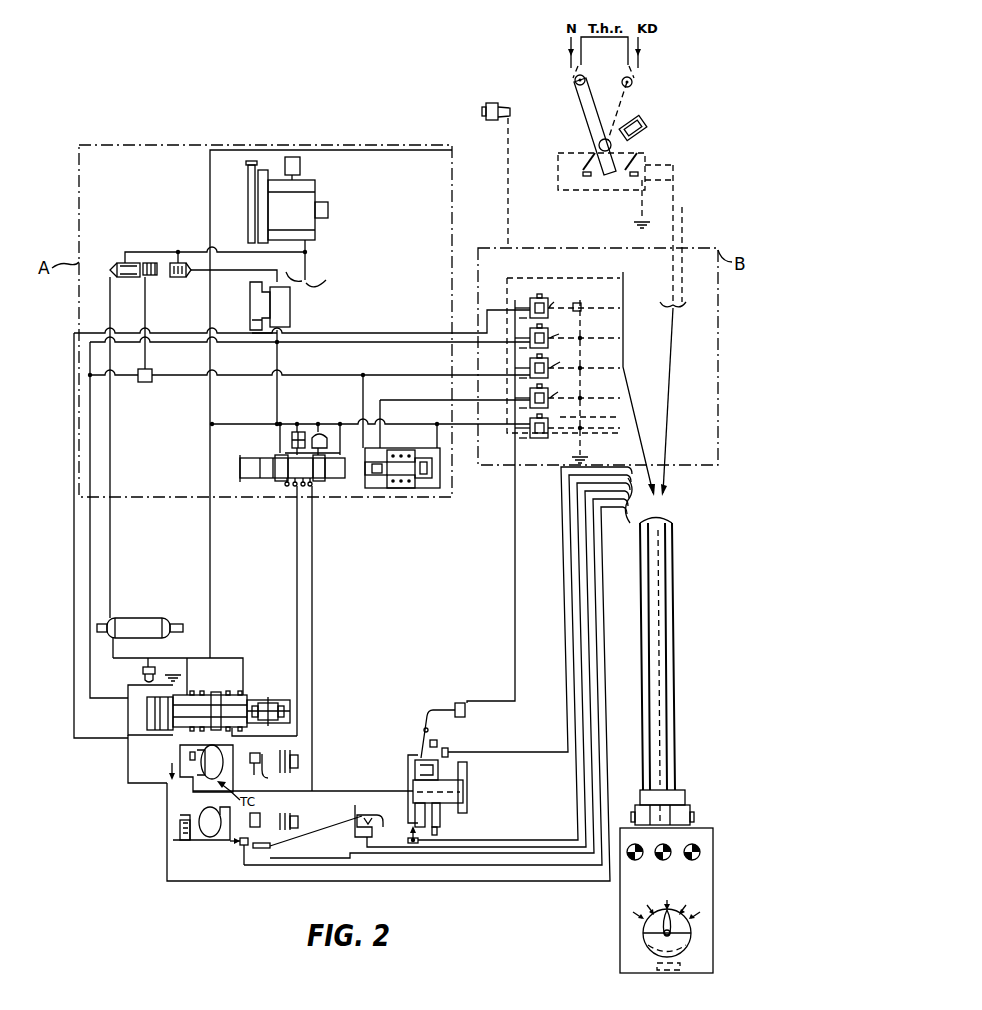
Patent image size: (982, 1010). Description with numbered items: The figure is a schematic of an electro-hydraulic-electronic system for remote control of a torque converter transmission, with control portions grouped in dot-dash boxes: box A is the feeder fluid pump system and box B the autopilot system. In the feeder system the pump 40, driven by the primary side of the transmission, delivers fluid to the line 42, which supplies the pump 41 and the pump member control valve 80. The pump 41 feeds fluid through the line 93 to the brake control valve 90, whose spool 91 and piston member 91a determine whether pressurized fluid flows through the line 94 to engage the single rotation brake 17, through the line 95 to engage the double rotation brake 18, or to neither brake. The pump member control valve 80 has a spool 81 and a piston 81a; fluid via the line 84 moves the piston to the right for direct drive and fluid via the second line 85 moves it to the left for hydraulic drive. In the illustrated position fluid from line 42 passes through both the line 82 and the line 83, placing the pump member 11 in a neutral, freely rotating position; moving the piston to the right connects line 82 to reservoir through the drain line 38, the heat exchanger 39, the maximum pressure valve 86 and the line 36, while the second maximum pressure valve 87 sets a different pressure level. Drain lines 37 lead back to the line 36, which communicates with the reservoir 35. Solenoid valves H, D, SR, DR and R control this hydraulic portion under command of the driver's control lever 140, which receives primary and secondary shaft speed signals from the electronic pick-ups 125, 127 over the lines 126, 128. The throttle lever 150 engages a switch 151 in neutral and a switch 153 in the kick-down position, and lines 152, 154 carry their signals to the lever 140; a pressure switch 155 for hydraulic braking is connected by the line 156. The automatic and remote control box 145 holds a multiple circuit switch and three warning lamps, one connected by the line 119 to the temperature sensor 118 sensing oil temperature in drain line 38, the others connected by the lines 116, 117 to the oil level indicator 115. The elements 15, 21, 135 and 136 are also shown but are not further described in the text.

The pump member 11 is at (190, 824).
The conduit 15 is at (350, 791).
The single rotation brake 17 is at (266, 790).
The double rotation brake 18 is at (298, 762).
The pressure regulator valve 21 is at (452, 781).
The reservoir 35 is at (322, 282).
The line 36 is at (157, 252).
The drain lines 37 is at (309, 262).
The drain line 38 is at (112, 288).
The heat exchanger 39 is at (140, 617).
The pump 40 is at (301, 219).
The pump 41 is at (292, 310).
The line 42 is at (210, 190).
The pump member control valve 80 is at (250, 697).
The spool 81 is at (232, 693).
The piston 81a is at (148, 712).
The line 82 is at (172, 788).
The line 83 is at (240, 745).
The line 84 is at (90, 575).
The line 85 is at (80, 733).
The maximum pressure valve 86 is at (128, 278).
The maximum pressure valve 87 is at (180, 278).
The brake control valve 90 is at (418, 490).
The spool 91 is at (360, 480).
The piston member 91a is at (388, 488).
The line 93 is at (278, 400).
The line 94 is at (297, 549).
The line 95 is at (312, 533).
The oil level indicator 115 is at (368, 808).
The line 116 is at (493, 848).
The line 117 is at (552, 858).
The temperature sensor 118 is at (153, 668).
The line 119 is at (128, 762).
The electronic pick-up 125 is at (240, 846).
The line 126 is at (330, 878).
The electronic pick-up 127 is at (413, 845).
The line 128 is at (520, 838).
The control unit 135 is at (578, 278).
The relay 136 is at (571, 303).
The driver's control lever 140 is at (643, 932).
The automatic and remote control box 145 is at (636, 825).
The throttle lever 150 is at (582, 102).
The switch 151 is at (637, 150).
The line 152 is at (682, 207).
The switch 153 is at (582, 155).
The line 154 is at (592, 184).
The pressure switch 155 is at (479, 130).
The line 156 is at (508, 165).